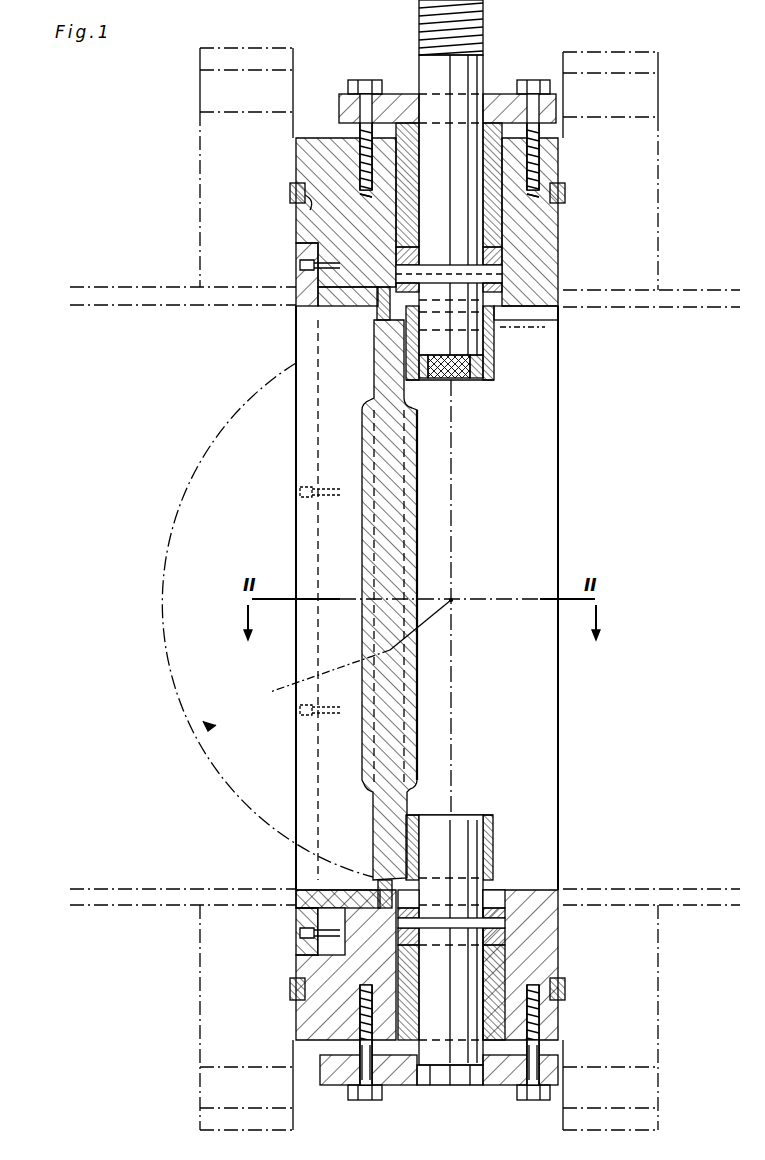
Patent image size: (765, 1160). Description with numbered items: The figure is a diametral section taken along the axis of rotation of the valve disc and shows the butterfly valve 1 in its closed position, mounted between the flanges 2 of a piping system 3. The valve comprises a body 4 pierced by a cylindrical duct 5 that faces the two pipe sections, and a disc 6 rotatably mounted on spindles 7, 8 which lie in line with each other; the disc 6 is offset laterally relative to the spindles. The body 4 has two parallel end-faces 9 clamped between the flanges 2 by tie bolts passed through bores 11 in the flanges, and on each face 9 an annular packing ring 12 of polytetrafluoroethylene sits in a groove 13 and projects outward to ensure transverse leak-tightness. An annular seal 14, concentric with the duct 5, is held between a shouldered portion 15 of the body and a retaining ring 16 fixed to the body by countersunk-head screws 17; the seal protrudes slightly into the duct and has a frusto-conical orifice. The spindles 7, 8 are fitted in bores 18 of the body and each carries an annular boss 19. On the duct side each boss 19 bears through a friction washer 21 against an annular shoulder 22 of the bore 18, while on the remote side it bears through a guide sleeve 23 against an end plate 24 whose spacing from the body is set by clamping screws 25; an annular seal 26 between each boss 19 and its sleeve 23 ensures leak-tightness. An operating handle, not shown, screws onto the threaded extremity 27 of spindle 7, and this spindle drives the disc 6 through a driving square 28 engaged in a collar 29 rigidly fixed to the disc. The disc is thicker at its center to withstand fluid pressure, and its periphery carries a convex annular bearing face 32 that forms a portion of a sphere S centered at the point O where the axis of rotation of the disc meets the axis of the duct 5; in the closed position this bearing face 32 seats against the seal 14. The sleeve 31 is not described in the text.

The butterfly valve 1 is at (350, 62).
The flanges 2 is at (205, 213).
The piping system 3 is at (165, 305).
The body 4 is at (537, 292).
The cylindrical duct 5 is at (525, 310).
The disc 6 is at (382, 528).
The spindle 7 is at (470, 72).
The spindle 8 is at (457, 1030).
The end-faces 9 is at (296, 158).
The bores 11 is at (225, 70).
The annular packing ring 12 is at (290, 190).
The groove 13 is at (305, 218).
The annular seal 14 is at (372, 308).
The shouldered portion 15 is at (390, 290).
The retaining ring 16 is at (296, 307).
The countersunk-head screws 17 is at (300, 937).
The bores 18 is at (512, 946).
The annular boss 19 is at (505, 921).
The friction washer 21 is at (498, 905).
The annular shoulder 22 is at (412, 906).
The guide sleeve 23 is at (405, 1028).
The end plate 24 is at (405, 1080).
The clamping screws 25 is at (368, 1098).
The annular seal 26 is at (505, 936).
The threaded extremity 27 is at (432, 30).
The driving square 28 is at (449, 380).
The collar 29 is at (487, 378).
The lower sleeve 31 is at (494, 838).
The convex annular bearing face 32 is at (383, 322).
The sphere S is at (215, 436).
The point of intersection O is at (370, 597).